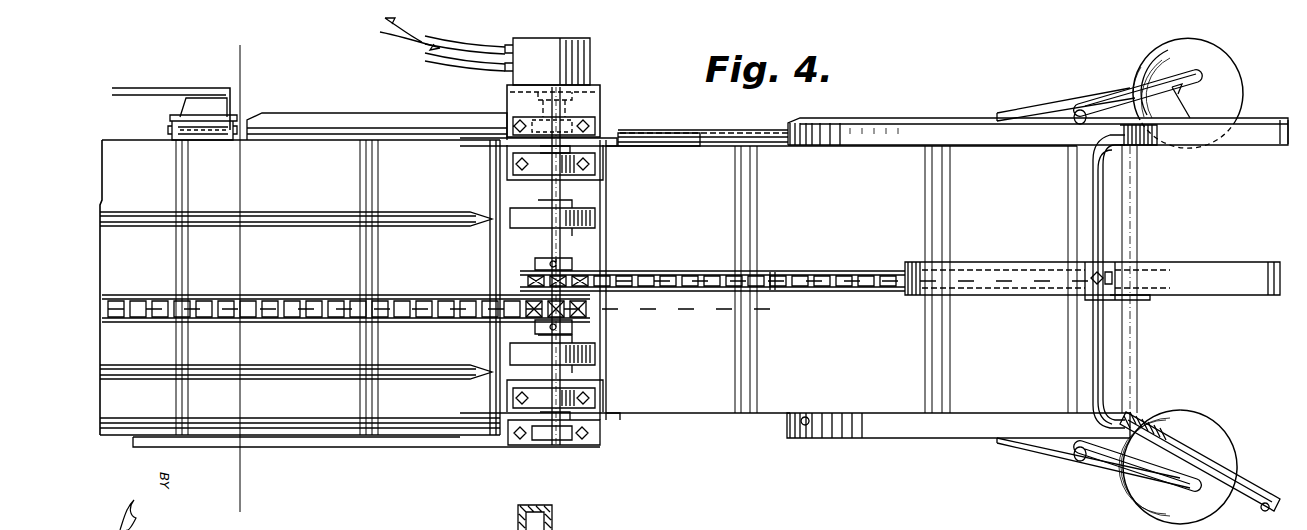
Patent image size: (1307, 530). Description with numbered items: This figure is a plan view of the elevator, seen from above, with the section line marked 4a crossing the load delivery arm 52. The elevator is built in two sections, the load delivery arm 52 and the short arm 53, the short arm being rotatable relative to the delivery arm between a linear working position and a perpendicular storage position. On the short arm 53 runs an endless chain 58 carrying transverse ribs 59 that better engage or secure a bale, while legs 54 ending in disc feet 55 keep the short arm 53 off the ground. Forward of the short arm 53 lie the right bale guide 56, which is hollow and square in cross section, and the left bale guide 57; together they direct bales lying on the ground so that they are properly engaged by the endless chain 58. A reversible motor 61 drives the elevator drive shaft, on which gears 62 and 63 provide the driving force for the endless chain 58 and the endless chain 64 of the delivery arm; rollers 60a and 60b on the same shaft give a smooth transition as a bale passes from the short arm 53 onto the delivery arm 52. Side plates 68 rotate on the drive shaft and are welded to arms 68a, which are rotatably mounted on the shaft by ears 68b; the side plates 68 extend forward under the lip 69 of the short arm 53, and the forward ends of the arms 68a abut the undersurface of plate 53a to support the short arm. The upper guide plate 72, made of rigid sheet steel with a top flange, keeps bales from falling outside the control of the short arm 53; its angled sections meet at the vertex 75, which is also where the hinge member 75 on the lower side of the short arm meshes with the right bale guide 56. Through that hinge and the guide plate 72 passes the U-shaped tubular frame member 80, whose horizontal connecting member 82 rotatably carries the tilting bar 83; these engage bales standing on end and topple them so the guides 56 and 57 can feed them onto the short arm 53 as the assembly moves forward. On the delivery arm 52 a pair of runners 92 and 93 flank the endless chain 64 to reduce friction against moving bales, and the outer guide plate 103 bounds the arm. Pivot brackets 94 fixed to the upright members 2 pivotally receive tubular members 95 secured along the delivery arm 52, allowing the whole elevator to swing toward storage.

The upright member 2 is at (177, 97).
The section line 4a is at (202, 65).
The load delivery arm 52 is at (330, 112).
The short arm 53 is at (942, 118).
The plate 53a is at (710, 162).
The leg 54 is at (1114, 98).
The disc foot 55 is at (1136, 58).
The right bale guide 56 is at (1252, 495).
The left bale guide 57 is at (1254, 138).
The endless chain 58 is at (760, 282).
The transverse rib 59 is at (775, 280).
The roller 60a is at (514, 351).
The roller 60b is at (512, 226).
The reversible motor 61 is at (591, 48).
The gear 62 is at (574, 264).
The gear 63 is at (578, 326).
The endless chain 64 is at (206, 316).
The side plate 68 is at (494, 146).
The arm 68a is at (608, 154).
The ear 68b is at (585, 168).
The lip 69 is at (808, 424).
The upper guide plate 72 is at (896, 440).
The hinge member 75 is at (1140, 420).
The U-shaped tubular frame member 80 is at (1097, 346).
The horizontal connecting member 82 is at (1098, 186).
The tilting bar 83 is at (980, 264).
The runner 92 is at (296, 374).
The runner 93 is at (306, 213).
The pivot bracket 94 is at (238, 118).
The tubular member 95 is at (186, 128).
The outer guide plate 103 is at (352, 428).